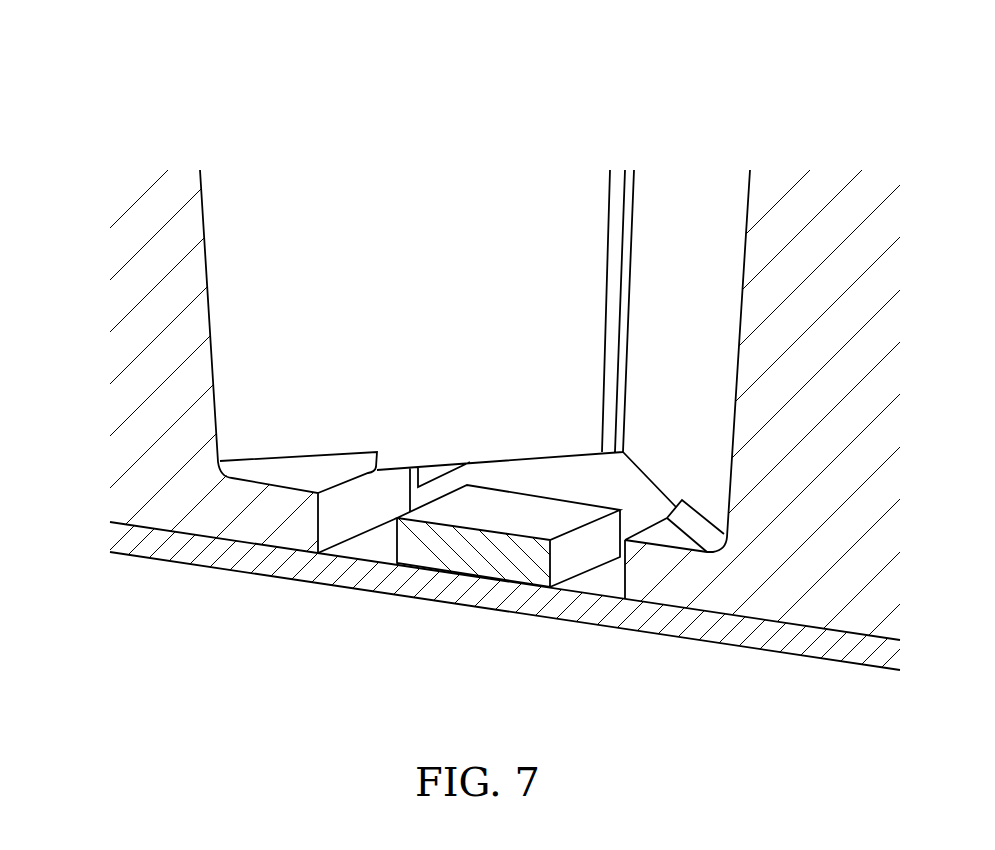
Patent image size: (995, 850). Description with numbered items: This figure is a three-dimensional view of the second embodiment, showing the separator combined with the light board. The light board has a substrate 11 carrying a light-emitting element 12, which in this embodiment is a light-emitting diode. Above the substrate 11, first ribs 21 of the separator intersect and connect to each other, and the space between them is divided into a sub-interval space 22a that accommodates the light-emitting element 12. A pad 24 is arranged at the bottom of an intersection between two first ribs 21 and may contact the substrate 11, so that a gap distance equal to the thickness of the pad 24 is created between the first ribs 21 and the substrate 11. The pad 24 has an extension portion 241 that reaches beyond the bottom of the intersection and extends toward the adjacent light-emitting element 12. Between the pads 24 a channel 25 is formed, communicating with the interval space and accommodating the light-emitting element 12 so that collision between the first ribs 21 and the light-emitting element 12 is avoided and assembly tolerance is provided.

The substrate 11 is at (133, 542).
The light-emitting element 12 is at (478, 555).
The first rib 21 is at (157, 207).
The sub-interval space 22a is at (452, 300).
The pad 24 is at (215, 517).
The extension portion 241 is at (302, 483).
The channel 25 is at (364, 565).